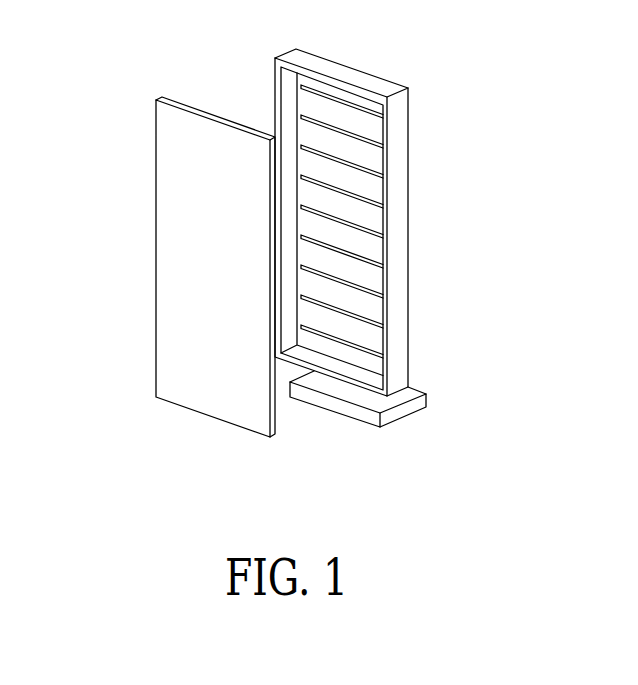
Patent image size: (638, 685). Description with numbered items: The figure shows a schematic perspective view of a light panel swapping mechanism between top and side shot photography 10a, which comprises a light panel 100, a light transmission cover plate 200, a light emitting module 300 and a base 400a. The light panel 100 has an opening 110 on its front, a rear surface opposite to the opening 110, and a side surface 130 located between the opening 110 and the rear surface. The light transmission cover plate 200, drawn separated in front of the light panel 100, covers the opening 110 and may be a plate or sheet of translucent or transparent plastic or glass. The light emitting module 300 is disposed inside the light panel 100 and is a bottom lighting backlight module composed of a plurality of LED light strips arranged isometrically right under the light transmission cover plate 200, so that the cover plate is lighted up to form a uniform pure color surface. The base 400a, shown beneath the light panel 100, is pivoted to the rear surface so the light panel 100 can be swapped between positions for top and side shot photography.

The light panel swapping mechanism between top and side shot photography 10a is at (508, 474).
The light panel 100 is at (409, 220).
The opening 110 is at (313, 80).
The side surface 130 is at (400, 142).
The light transmission cover plate 200 is at (157, 273).
The light emitting module 300 is at (362, 286).
The base 400a is at (427, 405).